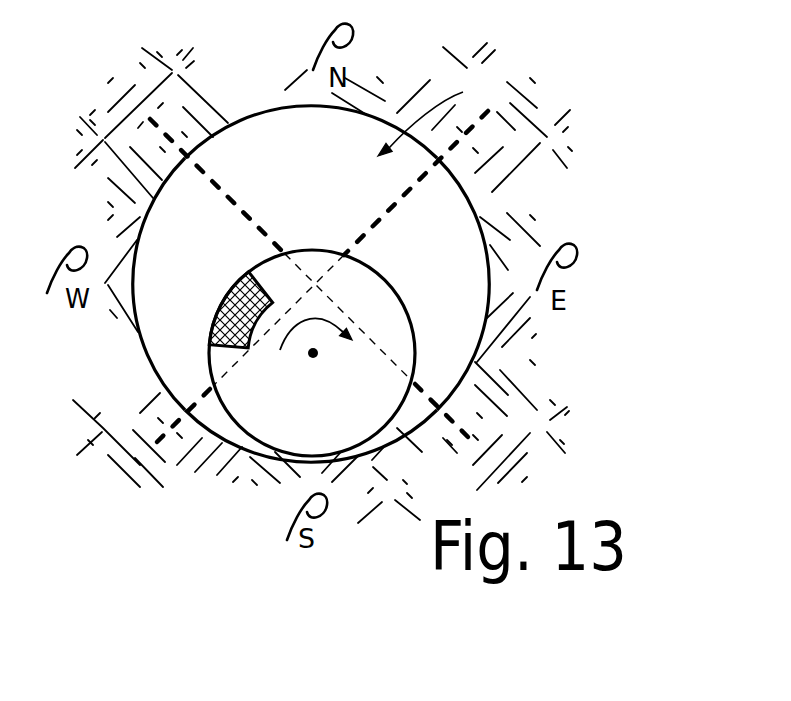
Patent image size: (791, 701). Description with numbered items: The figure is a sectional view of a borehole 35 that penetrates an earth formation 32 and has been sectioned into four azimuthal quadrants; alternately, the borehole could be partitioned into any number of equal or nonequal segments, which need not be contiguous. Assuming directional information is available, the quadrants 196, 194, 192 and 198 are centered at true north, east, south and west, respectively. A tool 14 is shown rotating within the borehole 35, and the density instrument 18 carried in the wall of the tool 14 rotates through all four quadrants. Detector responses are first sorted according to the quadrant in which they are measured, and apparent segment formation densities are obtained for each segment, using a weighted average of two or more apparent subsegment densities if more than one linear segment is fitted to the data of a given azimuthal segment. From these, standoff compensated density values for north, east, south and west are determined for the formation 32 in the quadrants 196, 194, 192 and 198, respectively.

The tool 14 is at (383, 322).
The density instrument 18 is at (242, 302).
The earth formation 32 is at (433, 71).
The borehole 35 is at (439, 115).
The quadrant 192 is at (410, 413).
The quadrant 194 is at (448, 237).
The quadrant 196 is at (267, 143).
The quadrant 198 is at (183, 328).